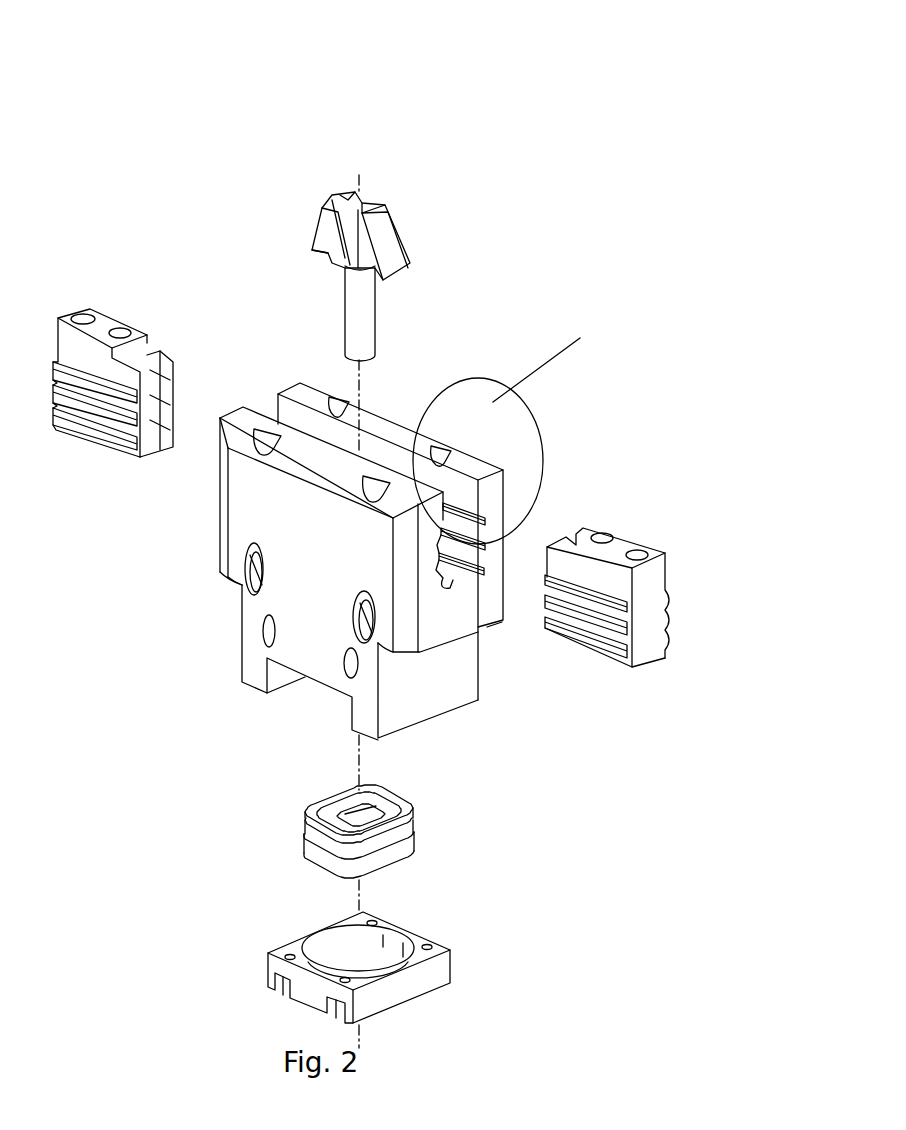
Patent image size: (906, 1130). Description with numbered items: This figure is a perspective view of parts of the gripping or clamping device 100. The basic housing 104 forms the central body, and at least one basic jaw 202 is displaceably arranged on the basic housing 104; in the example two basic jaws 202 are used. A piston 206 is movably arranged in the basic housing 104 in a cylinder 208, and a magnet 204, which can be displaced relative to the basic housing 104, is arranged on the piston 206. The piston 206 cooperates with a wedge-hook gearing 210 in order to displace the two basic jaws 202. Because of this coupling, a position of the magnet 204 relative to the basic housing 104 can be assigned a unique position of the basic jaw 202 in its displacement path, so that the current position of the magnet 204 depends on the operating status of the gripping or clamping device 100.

The gripping or clamping device 100 is at (122, 135).
The basic housing 104 is at (315, 557).
The basic jaw 202 is at (84, 316).
The magnet 204 is at (315, 803).
The piston 206 is at (417, 840).
The cylinder 208 is at (452, 966).
The wedge-hook gearing 210 is at (386, 233).